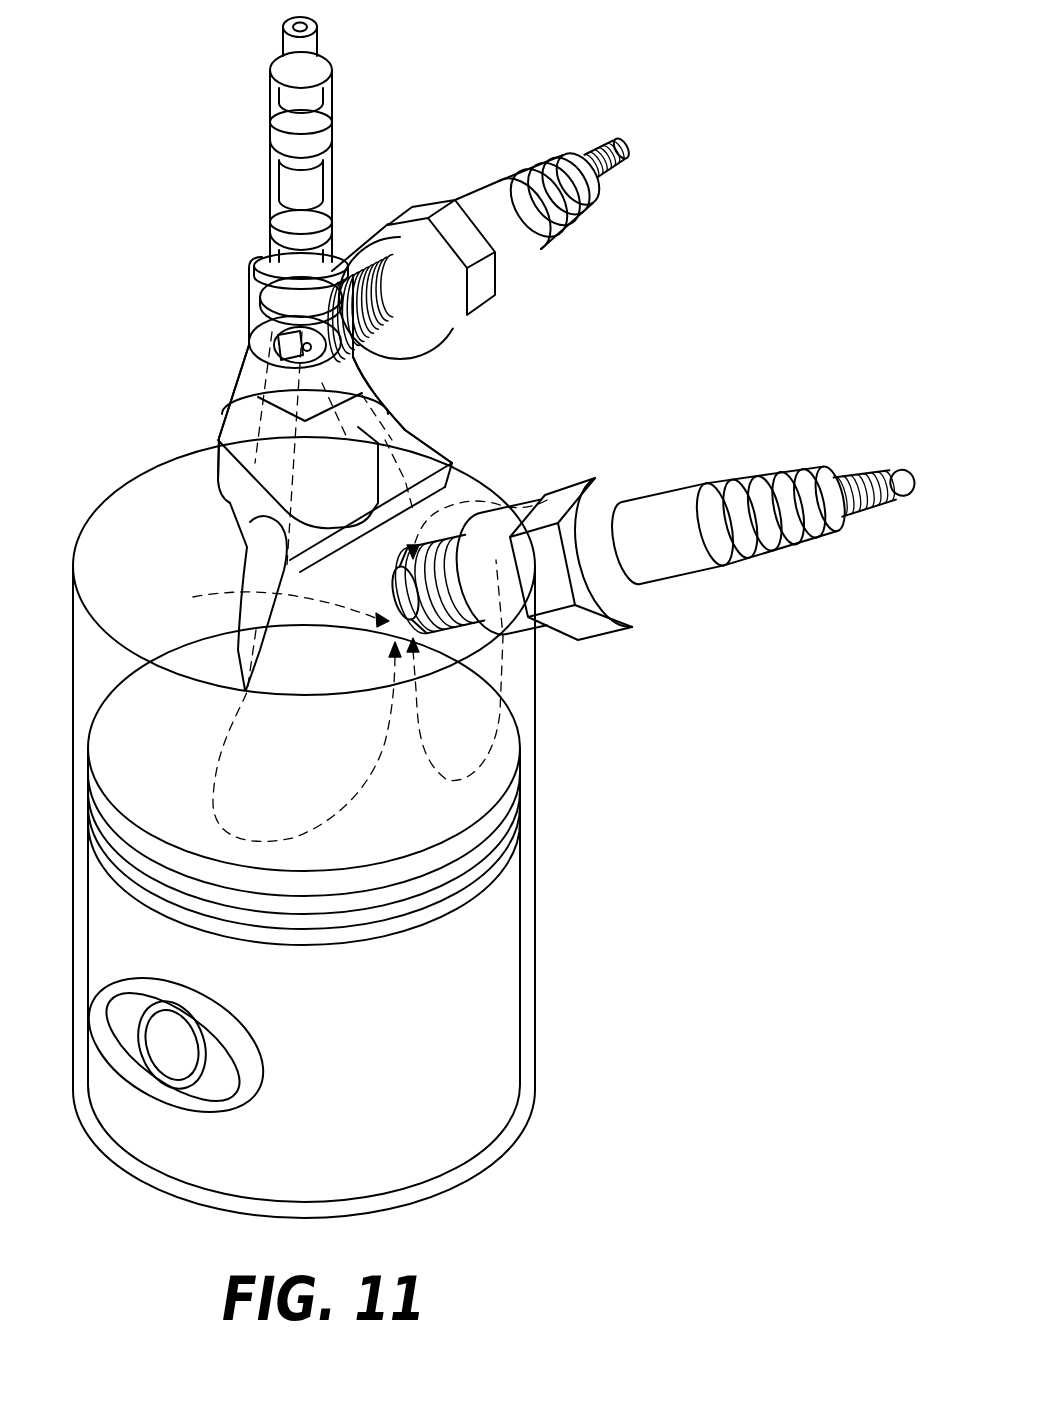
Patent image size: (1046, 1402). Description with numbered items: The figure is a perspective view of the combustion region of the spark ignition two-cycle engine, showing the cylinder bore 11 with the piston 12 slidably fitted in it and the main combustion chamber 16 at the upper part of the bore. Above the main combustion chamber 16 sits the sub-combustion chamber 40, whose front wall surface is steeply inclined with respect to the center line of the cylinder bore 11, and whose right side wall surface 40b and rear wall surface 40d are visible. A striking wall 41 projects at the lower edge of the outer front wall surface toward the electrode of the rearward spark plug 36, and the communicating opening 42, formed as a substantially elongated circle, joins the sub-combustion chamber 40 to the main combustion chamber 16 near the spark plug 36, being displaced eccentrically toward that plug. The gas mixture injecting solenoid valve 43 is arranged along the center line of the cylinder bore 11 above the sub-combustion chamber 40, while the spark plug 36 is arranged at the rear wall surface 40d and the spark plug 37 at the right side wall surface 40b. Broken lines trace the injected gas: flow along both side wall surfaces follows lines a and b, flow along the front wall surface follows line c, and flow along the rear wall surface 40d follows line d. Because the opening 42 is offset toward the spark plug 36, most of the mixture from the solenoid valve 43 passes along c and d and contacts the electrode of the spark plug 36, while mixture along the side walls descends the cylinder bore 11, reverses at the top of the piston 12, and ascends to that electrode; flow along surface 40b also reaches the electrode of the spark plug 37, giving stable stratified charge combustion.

The cylinder bore 11 is at (73, 627).
The piston 12 is at (497, 938).
The main combustion chamber 16 is at (291, 633).
The spark plug 36 is at (681, 507).
The spark plug 37 is at (510, 246).
The sub-combustion chamber 40 is at (335, 409).
The right side wall surface 40b is at (404, 411).
The rear wall surface 40d is at (243, 498).
The striking wall 41 is at (325, 567).
The communicating opening 42 is at (262, 640).
The gas mixture injecting solenoid valve 43 is at (332, 181).
The broken line a is at (238, 737).
The broken line b is at (475, 750).
The broken line c is at (179, 602).
The broken line d is at (505, 487).